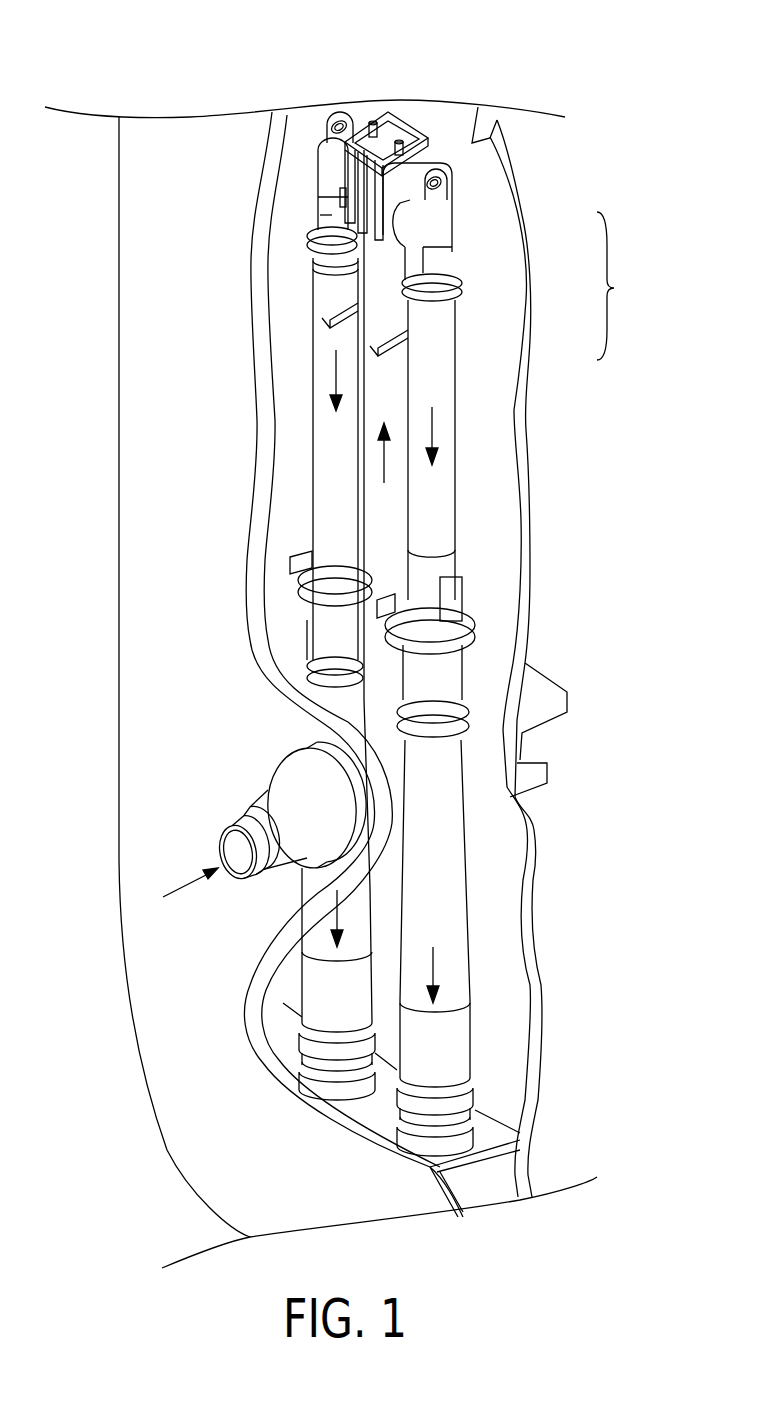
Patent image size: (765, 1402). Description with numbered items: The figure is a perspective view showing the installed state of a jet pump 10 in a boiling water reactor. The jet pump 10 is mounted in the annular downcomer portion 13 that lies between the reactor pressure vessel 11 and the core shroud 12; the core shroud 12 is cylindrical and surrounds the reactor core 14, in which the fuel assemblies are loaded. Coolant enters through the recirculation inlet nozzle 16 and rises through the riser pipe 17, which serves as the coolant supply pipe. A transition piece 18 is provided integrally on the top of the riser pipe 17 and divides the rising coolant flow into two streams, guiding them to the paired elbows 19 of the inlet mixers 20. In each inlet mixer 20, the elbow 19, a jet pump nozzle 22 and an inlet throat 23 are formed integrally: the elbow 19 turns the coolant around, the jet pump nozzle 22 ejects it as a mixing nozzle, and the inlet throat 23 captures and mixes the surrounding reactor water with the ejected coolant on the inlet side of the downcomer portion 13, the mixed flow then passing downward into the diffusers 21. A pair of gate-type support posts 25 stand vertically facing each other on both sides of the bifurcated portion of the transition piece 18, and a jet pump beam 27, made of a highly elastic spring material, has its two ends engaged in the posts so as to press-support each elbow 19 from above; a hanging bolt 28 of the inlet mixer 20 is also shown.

The jet pump 10 is at (470, 185).
The reactor pressure vessel 11 is at (119, 597).
The core shroud 12 is at (527, 490).
The downcomer portion 13 is at (507, 980).
The reactor core 14 is at (673, 552).
The recirculation inlet nozzle 16 is at (265, 800).
The riser pipe 17 is at (380, 493).
The transition piece 18 is at (310, 242).
The elbow 19 is at (328, 215).
The inlet mixer 20 is at (87, 237).
The diffuser 21 is at (463, 837).
The jet pump nozzle 22 is at (340, 200).
The inlet throat 23 is at (313, 373).
The support post 25 is at (345, 158).
The jet pump beam 27 is at (383, 123).
The hanging bolt 28 is at (338, 116).